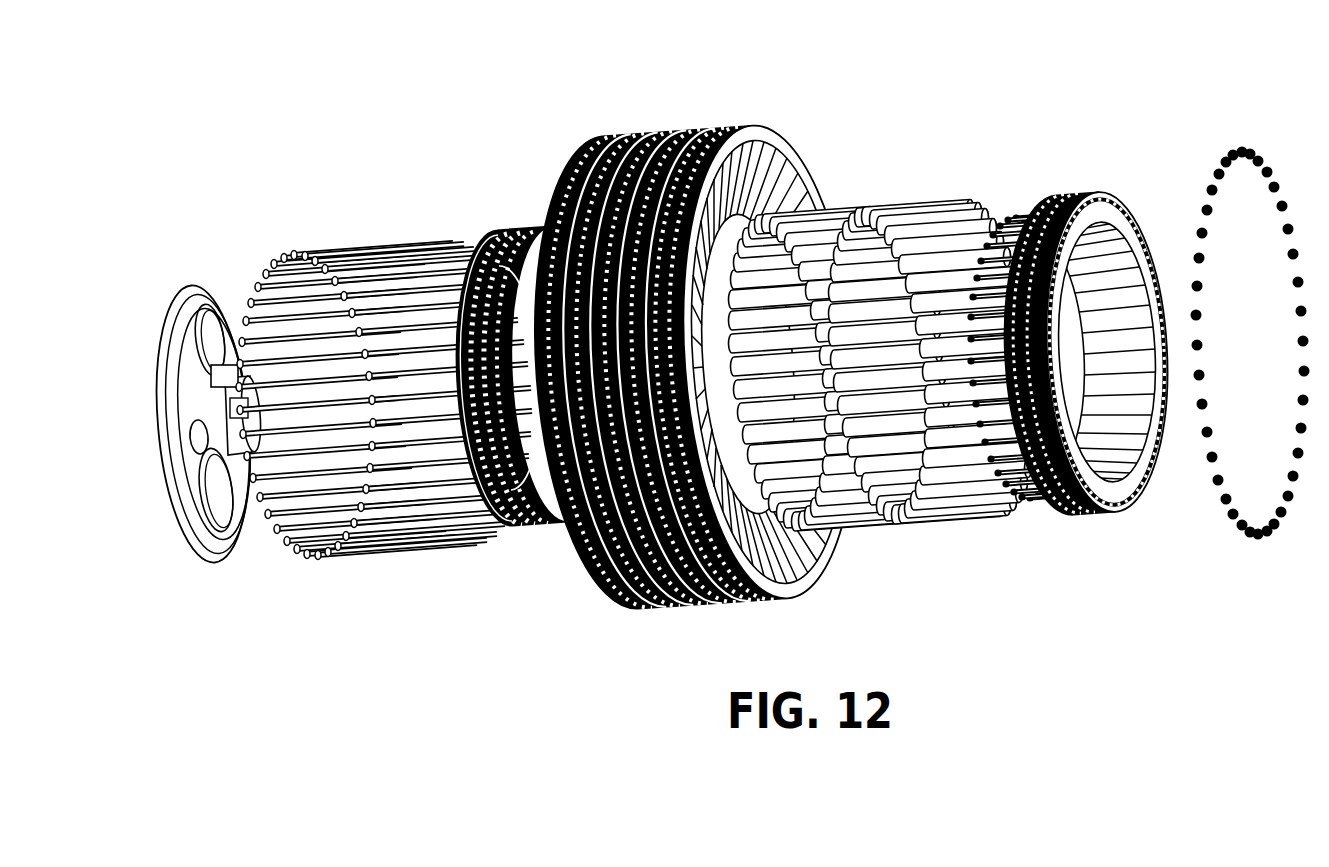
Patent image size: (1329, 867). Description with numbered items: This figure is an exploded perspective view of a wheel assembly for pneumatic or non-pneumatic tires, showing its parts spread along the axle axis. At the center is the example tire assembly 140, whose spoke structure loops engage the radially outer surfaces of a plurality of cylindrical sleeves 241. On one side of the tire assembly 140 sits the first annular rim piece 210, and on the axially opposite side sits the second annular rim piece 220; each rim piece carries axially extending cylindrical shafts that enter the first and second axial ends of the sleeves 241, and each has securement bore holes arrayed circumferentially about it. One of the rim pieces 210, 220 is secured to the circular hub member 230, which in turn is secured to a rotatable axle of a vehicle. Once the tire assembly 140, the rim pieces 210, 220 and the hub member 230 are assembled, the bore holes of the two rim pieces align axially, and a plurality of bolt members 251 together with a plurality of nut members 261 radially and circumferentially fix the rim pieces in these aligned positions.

The tire assembly 140 is at (680, 110).
The first annular rim piece 210 is at (518, 202).
The second annular rim piece 220 is at (1083, 171).
The circular hub member 230 is at (190, 260).
The sleeves 241 is at (894, 184).
The bolt members 251 is at (378, 232).
The nut members 261 is at (1242, 130).